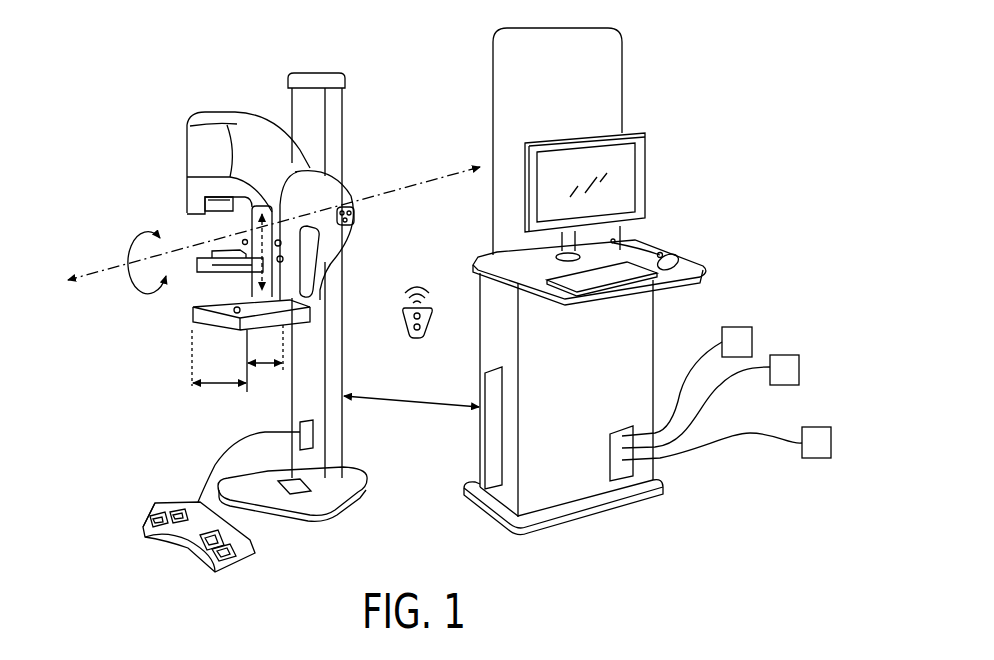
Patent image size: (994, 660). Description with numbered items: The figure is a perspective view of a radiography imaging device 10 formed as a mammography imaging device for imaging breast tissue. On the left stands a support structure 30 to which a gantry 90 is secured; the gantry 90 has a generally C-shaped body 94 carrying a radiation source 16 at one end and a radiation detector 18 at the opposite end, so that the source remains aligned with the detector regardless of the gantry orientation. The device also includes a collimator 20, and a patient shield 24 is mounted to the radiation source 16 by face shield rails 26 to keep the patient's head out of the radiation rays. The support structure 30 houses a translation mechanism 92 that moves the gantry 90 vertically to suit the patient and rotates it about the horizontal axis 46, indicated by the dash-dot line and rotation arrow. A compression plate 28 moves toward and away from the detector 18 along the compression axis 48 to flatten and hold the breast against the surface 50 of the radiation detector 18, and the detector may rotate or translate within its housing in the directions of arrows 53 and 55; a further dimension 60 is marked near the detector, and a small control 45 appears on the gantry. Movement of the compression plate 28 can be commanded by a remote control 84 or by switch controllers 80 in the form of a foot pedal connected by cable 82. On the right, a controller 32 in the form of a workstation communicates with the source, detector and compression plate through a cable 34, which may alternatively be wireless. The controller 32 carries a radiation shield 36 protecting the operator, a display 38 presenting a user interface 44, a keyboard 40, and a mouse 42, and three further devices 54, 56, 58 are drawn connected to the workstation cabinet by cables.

The radiography imaging device 10 is at (230, 62).
The support structure 30 is at (337, 100).
The gantry 90 is at (184, 123).
The C-shaped body 94 is at (208, 135).
The radiation source 16 is at (204, 181).
The face shield rails 26 is at (209, 191).
The collimator 20 is at (205, 203).
The patient shield 24 is at (208, 222).
The translation mechanism 92 is at (354, 188).
The control button 45 is at (276, 224).
The compression axis 48 is at (262, 283).
The compression plate 28 is at (205, 278).
The radiation detector 18 is at (192, 333).
The surface of the radiation detector 50 is at (196, 308).
The distance 60 is at (223, 312).
The arrow 53 is at (220, 385).
The arrow 55 is at (268, 366).
The axis 46 is at (102, 270).
The cable 82 is at (200, 472).
The switch controllers 80 is at (184, 553).
The remote control 84 is at (431, 327).
The cable 34 is at (443, 406).
The controller 32 is at (647, 44).
The radiation shield 36 is at (604, 82).
The display 38 is at (647, 153).
The user interface 44 is at (624, 189).
The mouse 42 is at (681, 258).
The keyboard 40 is at (600, 284).
The external device 54 is at (736, 326).
The external device 56 is at (785, 355).
The external device 58 is at (815, 427).